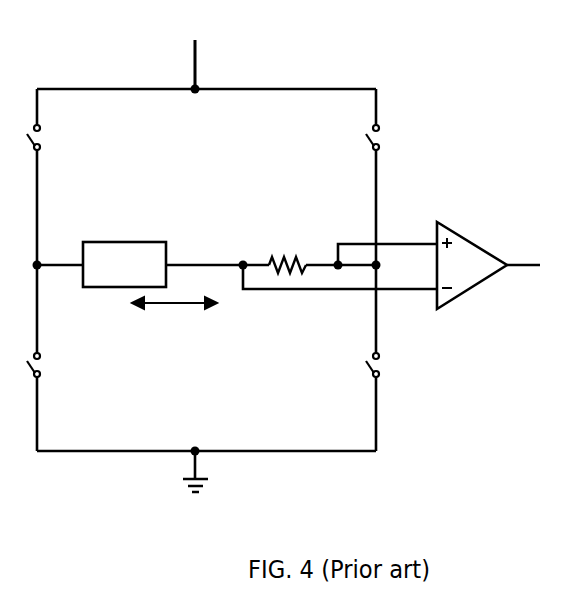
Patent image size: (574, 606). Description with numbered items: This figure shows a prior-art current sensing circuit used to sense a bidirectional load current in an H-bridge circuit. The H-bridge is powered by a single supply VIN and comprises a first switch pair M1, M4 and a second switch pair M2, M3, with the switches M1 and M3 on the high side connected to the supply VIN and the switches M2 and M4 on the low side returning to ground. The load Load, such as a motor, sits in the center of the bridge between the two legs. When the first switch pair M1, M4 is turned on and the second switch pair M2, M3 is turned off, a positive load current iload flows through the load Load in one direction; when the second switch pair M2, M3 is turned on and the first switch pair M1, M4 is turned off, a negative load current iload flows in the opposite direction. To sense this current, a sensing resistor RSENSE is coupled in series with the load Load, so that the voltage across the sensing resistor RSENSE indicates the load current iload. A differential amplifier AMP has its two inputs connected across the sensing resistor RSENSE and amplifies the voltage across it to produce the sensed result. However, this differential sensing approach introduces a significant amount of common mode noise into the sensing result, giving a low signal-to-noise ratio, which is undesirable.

The supply VIN is at (197, 50).
The switch M1 is at (57, 143).
The switch M2 is at (57, 371).
The switch M3 is at (397, 143).
The switch M4 is at (397, 371).
The load Load is at (124, 264).
The load current iload is at (174, 317).
The sensing resistor RSENSE is at (286, 249).
The differential amplifier AMP is at (472, 265).